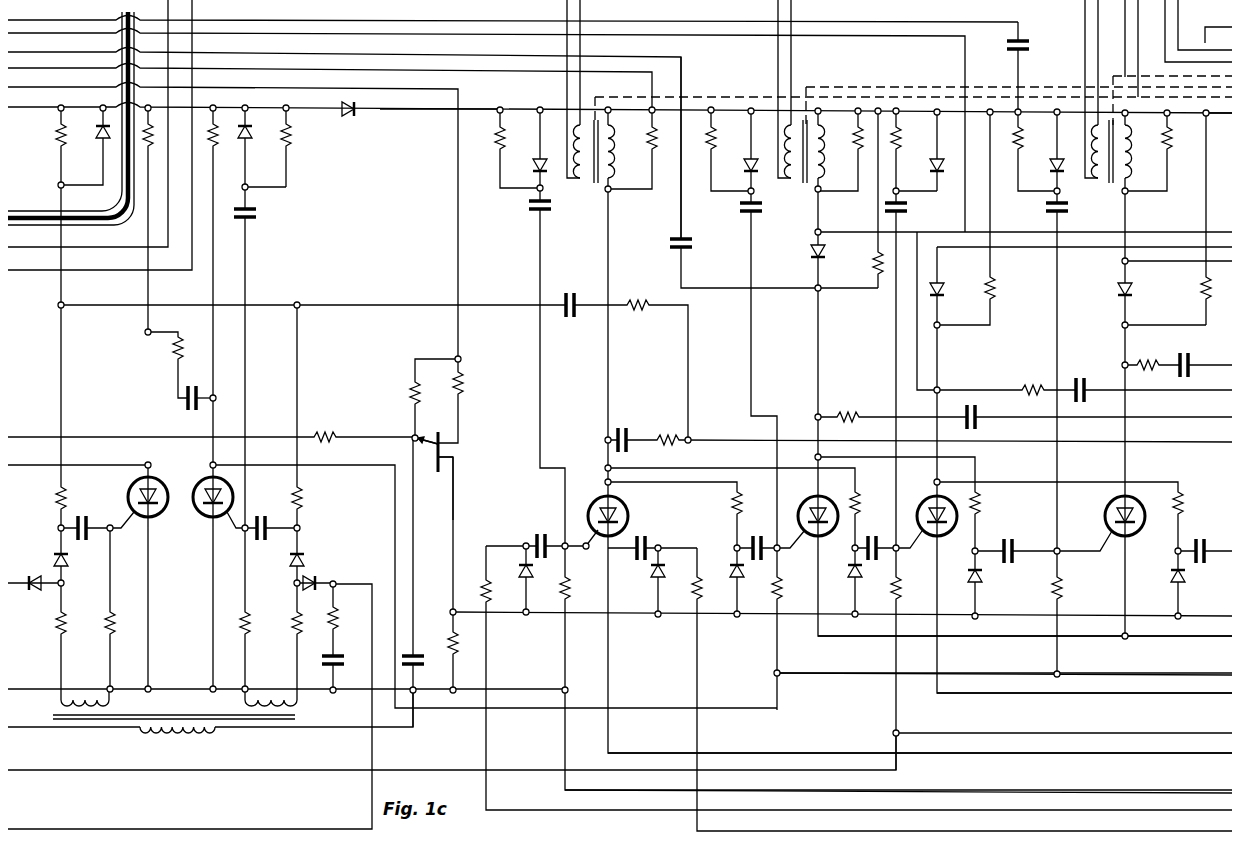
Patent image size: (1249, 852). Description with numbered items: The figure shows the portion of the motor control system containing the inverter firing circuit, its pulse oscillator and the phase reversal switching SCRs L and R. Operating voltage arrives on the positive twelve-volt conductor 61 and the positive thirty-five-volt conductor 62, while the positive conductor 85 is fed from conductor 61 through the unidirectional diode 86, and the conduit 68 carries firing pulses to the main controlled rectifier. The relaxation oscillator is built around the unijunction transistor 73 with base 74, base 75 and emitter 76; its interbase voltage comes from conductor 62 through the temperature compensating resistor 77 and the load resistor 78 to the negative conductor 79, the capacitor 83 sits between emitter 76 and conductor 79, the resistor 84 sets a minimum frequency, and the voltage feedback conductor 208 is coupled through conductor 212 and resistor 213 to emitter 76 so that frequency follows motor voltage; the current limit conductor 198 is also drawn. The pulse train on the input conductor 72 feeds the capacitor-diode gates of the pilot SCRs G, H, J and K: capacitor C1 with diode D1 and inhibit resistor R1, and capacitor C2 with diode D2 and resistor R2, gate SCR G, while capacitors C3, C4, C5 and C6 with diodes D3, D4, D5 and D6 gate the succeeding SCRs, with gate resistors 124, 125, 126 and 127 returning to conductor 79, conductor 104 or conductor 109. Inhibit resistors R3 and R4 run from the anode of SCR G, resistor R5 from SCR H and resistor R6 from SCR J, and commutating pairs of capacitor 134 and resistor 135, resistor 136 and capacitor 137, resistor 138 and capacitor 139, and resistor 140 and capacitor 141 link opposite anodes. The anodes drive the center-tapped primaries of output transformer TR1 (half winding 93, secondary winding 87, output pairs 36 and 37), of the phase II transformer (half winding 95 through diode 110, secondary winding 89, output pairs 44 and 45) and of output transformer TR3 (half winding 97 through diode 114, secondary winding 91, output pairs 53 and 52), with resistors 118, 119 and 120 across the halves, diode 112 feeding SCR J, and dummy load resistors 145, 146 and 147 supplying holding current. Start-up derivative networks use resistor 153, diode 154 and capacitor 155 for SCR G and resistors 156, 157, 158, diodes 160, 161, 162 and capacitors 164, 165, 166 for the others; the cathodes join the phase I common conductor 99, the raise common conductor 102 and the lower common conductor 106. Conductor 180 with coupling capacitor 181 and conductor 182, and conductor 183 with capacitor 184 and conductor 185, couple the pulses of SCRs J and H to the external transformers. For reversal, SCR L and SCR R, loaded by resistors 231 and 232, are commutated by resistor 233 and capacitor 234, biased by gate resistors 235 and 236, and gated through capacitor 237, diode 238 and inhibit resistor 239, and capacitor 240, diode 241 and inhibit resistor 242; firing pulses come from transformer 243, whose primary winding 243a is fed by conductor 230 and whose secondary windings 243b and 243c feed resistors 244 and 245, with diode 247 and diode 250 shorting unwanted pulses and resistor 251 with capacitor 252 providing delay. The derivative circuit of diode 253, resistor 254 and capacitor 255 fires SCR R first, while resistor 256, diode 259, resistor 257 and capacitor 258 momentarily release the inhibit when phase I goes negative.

The conductor 180 is at (292, 25).
The conductor 182 is at (376, 37).
The conductor 183 is at (640, 52).
The conductor 185 is at (636, 72).
The positive 35-volt conductor 62 is at (428, 89).
The positive 12-volt conductor 61 is at (50, 110).
The positive conductor 85 is at (424, 110).
The unidirectional diode 86 is at (358, 114).
The output conductor pair 36 is at (566, 80).
The output conductor pair 53 is at (794, 52).
The output conductor pair 44 is at (1084, 50).
The output conductor pair 37 is at (1136, 32).
The output conductor pair 52 is at (1165, 42).
The output conductor pair 45 is at (1204, 25).
The output transformer TR1 is at (724, 96).
The output transformer TR3 is at (894, 87).
The coupling capacitor 181 is at (1008, 46).
The conduit 68 is at (38, 209).
The conductor 198 is at (120, 246).
The voltage feedback conductor 208 is at (120, 274).
The resistor 256 is at (58, 146).
The diode 259 is at (96, 145).
The load resistor 231 is at (154, 122).
The load resistor 232 is at (218, 144).
The diode 253 is at (254, 144).
The resistor 254 is at (290, 146).
The capacitor 255 is at (258, 216).
The resistor 233 is at (192, 330).
The commutating capacitor 234 is at (194, 410).
The conductor 212 is at (112, 430).
The resistor 213 is at (326, 430).
The inhibit resistor 239 is at (56, 494).
The capacitor 237 is at (86, 512).
The silicon controlled rectifier L is at (166, 482).
The silicon controlled rectifier R is at (200, 482).
The capacitor 240 is at (262, 512).
The inhibit resistor 242 is at (304, 492).
The diode 238 is at (68, 563).
The diode 247 is at (34, 572).
The resistor 244 is at (56, 620).
The gate resistor 235 is at (104, 612).
The secondary winding 243b is at (70, 696).
The diode 241 is at (300, 562).
The diode 250 is at (320, 580).
The resistor 245 is at (294, 628).
The gate resistor 236 is at (254, 618).
The secondary winding 243c is at (284, 696).
The transformer 243 is at (298, 716).
The conductor 230 is at (58, 728).
The primary winding 243a is at (208, 732).
The resistor 251 is at (340, 614).
The capacitor 252 is at (346, 660).
The negative conductor 79 is at (38, 690).
The lower conductor 109 is at (106, 772).
The resistor 84 is at (408, 394).
The temperature compensating resistor 77 is at (466, 374).
The base 74 is at (443, 433).
The unijunction transistor 73 is at (454, 456).
The emitter 76 is at (388, 460).
The base 75 is at (448, 470).
The capacitor 83 is at (426, 656).
The load resistor 78 is at (460, 656).
The resistor 153 is at (496, 138).
The diode 154 is at (534, 166).
The capacitor 155 is at (516, 208).
The secondary winding 87 is at (580, 180).
The primary winding half 93 is at (614, 146).
The resistor 118 is at (644, 162).
The capacitor 258 is at (568, 292).
The resistor 257 is at (638, 300).
The capacitor 184 is at (666, 242).
The commutating capacitor 134 is at (624, 426).
The resistor 135 is at (666, 432).
The pilot silicon controlled rectifier G is at (598, 496).
The phase I common conductor 99 is at (1110, 758).
The resistor R4 is at (852, 490).
The resistor R3 is at (734, 500).
The capacitor C1 is at (538, 532).
The resistor R1 is at (484, 584).
The diode D1 is at (522, 576).
The gate resistor 124 is at (570, 588).
The input conductor 72 is at (654, 616).
The capacitor C2 is at (650, 532).
The resistor R2 is at (696, 586).
The diode D2 is at (652, 576).
The capacitor C3 is at (758, 532).
The diode D3 is at (732, 576).
The gate resistor 125 is at (788, 584).
The conductor 104 is at (848, 674).
The pilot silicon controlled rectifier H is at (811, 498).
The raise common conductor 102 is at (1190, 640).
The capacitor C4 is at (886, 532).
The diode D4 is at (849, 586).
The gate resistor 126 is at (897, 584).
The resistor 156 is at (708, 144).
The diode 160 is at (748, 164).
The capacitor 164 is at (738, 207).
The secondary winding 91 is at (788, 180).
The primary winding half 97 is at (822, 146).
The resistor 119 is at (856, 162).
The diode 114 is at (810, 254).
The dummy load resistor 145 is at (874, 258).
The resistor 136 is at (846, 410).
The commutating capacitor 137 is at (972, 414).
The resistor 157 is at (899, 144).
The diode 161 is at (934, 166).
The capacitor 165 is at (910, 208).
The pilot silicon controlled rectifier J is at (928, 496).
The diode 112 is at (946, 288).
The lower common conductor 106 is at (1032, 698).
The dummy load resistor 146 is at (998, 286).
The resistor 138 is at (1036, 380).
The commutating capacitor 139 is at (1080, 376).
The resistor 158 is at (1022, 146).
The diode 162 is at (1052, 168).
The capacitor 166 is at (1046, 210).
The gate resistor 127 is at (1060, 588).
The secondary winding 89 is at (1098, 182).
The primary winding half 95 is at (1130, 148).
The resistor 120 is at (1164, 162).
The diode 110 is at (1118, 286).
The dummy load resistor 147 is at (1200, 284).
The resistor 140 is at (1146, 362).
The commutating capacitor 141 is at (1180, 354).
The pilot silicon controlled rectifier K is at (1107, 494).
The resistor R5 is at (980, 502).
The capacitor C5 is at (1010, 539).
The diode D5 is at (970, 580).
The resistor R6 is at (1184, 500).
The capacitor C6 is at (1202, 539).
The diode D6 is at (1172, 572).